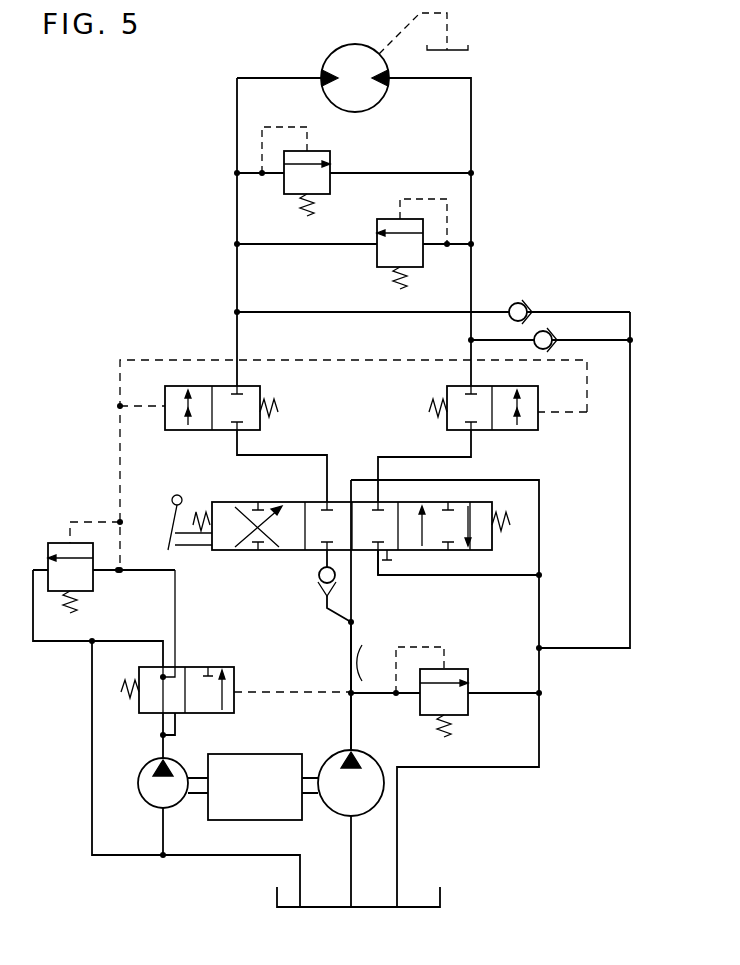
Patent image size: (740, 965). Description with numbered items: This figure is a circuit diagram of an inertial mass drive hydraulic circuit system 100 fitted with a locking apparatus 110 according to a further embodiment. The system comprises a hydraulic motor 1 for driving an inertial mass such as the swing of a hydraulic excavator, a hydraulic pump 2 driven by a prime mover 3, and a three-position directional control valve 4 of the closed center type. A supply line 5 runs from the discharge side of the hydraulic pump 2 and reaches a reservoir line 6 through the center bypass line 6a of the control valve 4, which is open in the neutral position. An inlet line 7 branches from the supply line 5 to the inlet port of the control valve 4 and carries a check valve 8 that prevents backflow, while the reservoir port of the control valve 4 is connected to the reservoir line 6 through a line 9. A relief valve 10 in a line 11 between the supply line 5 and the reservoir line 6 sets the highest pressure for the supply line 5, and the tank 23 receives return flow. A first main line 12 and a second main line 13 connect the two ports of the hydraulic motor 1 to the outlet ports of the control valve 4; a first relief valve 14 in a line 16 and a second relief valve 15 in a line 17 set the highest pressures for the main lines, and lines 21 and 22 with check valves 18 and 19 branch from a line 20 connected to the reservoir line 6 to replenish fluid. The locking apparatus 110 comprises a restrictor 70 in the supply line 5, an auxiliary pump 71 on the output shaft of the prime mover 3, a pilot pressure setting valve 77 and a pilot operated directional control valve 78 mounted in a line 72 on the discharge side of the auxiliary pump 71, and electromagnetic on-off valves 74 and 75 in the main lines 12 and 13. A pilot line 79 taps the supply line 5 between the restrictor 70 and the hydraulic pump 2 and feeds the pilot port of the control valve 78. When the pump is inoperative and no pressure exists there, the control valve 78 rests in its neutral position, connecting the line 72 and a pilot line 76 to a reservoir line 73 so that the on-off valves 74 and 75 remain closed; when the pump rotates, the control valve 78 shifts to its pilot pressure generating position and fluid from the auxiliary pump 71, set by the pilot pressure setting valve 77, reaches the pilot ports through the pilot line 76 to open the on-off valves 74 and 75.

The hydraulic motor 1 is at (330, 58).
The hydraulic pump 2 is at (368, 770).
The prime mover 3 is at (290, 822).
The three-position directional control valve 4 is at (225, 502).
The supply line 5 is at (352, 723).
The reservoir line 6 is at (541, 618).
The center bypass line 6a is at (374, 581).
The inlet line 7 is at (327, 607).
The check valve 8 is at (318, 582).
The line 9 is at (462, 575).
The relief valve 10 is at (470, 706).
The line 11 is at (496, 693).
The first main line 12 is at (237, 197).
The second main line 13 is at (471, 205).
The first relief valve 14 is at (330, 158).
The second relief valve 15 is at (377, 258).
The line 16 is at (408, 173).
The line 17 is at (300, 246).
The check valve 18 is at (522, 305).
The check valve 19 is at (550, 346).
The line 20 is at (636, 425).
The line 21 is at (590, 312).
The line 22 is at (630, 346).
The tank 23 is at (440, 890).
The restrictor 70 is at (344, 663).
The auxiliary pump 71 is at (148, 806).
The line 72 is at (158, 750).
The reservoir line 73 is at (92, 672).
The electromagnetic on-off valve 74 is at (167, 386).
The electromagnetic on-off valve 75 is at (540, 420).
The pilot line 76 is at (330, 362).
The pilot pressure setting valve 77 is at (63, 543).
The pilot operated directional control valve 78 is at (212, 667).
The pilot line 79 is at (262, 690).
The inertial mass drive hydraulic circuit system 100 is at (493, 104).
The locking apparatus 110 is at (155, 360).